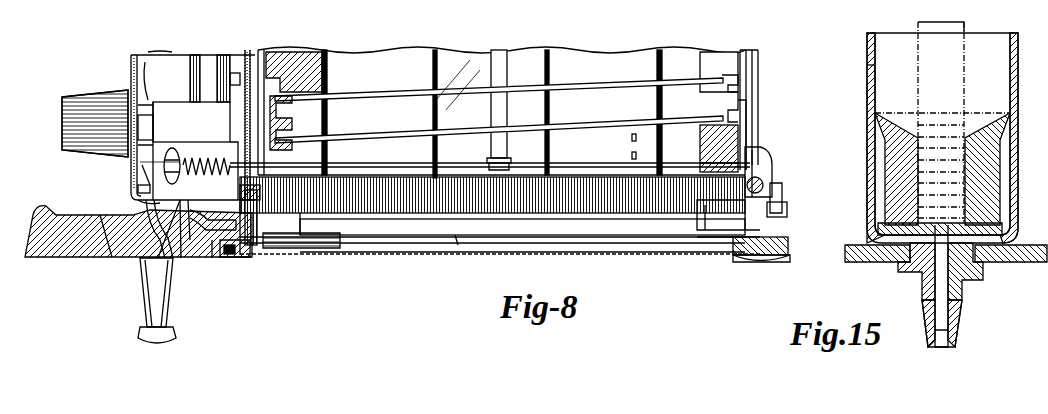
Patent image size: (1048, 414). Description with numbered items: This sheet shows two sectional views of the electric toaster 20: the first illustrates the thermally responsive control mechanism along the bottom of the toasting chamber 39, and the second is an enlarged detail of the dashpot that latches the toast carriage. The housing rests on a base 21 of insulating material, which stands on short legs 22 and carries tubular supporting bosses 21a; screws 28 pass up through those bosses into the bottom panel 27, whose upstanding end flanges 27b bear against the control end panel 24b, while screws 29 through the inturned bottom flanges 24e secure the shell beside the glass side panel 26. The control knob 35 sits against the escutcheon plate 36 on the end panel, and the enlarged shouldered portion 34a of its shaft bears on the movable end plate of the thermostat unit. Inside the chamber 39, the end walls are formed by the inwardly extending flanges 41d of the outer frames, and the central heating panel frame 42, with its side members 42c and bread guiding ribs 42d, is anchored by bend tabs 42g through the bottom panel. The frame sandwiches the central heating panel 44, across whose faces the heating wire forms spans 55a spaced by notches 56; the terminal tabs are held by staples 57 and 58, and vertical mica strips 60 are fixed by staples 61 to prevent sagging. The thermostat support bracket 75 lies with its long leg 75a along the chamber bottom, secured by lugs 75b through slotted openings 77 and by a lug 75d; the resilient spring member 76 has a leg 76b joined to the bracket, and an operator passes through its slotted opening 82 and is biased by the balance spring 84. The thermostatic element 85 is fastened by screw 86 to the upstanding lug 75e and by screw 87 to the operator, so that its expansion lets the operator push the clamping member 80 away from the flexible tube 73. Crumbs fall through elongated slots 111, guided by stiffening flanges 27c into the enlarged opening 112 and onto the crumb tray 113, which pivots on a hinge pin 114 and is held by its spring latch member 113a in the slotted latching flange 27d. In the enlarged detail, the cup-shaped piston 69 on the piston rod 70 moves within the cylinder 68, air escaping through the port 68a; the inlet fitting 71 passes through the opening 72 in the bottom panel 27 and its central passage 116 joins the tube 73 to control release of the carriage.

In FIG. 8, the electric toaster 20 is at (348, 299).
In FIG. 8, the base 21 is at (40, 208).
In FIG. 8, the tubular supporting bosses 21a is at (112, 257).
In FIG. 8, the legs 22 is at (170, 318).
In FIG. 8, the control end panel 24b is at (131, 60).
In FIG. 8, the bottom flanges 24e is at (138, 200).
In FIG. 8, the side panel 26 is at (152, 52).
In FIG. 8, the bottom panel 27 is at (290, 215).
In FIG. 15, the bottom panel 27 is at (1030, 244).
In FIG. 8, the upstanding end flanges 27b is at (137, 190).
In FIG. 8, the stiffening flanges 27c is at (545, 246).
In FIG. 8, the slotted latching flange 27d is at (748, 262).
In FIG. 8, the screws 28 is at (240, 258).
In FIG. 8, the screws 29 is at (150, 240).
In FIG. 8, the enlarged shouldered portion 34a is at (146, 60).
In FIG. 8, the control knob 35 is at (58, 100).
In FIG. 8, the escutcheon plate 36 is at (128, 72).
In FIG. 8, the toasting chamber 39 is at (578, 114).
In FIG. 8, the inwardly extending flanges 41d is at (247, 50).
In FIG. 8, the central heating panel frame 42 is at (262, 48).
In FIG. 8, the side members 42c is at (270, 58).
In FIG. 8, the bread guiding ribs 42d is at (340, 50).
In FIG. 8, the bend tabs 42g is at (252, 262).
In FIG. 8, the central heating panel 44 is at (460, 38).
In FIG. 8, the spans 55a is at (378, 104).
In FIG. 8, the notches 56 is at (278, 112).
In FIG. 8, the staple 57 is at (740, 130).
In FIG. 8, the staple 58 is at (714, 150).
In FIG. 8, the vertical mica strips 60 is at (500, 52).
In FIG. 8, the staples 61 is at (492, 158).
In FIG. 8, the cylinder 68 is at (222, 55).
In FIG. 15, the cylinder 68 is at (1017, 60).
In FIG. 15, the port 68a is at (866, 68).
In FIG. 15, the piston 69 is at (1002, 110).
In FIG. 15, the piston rod 70 is at (945, 25).
In FIG. 15, the inlet fitting 71 is at (978, 284).
In FIG. 15, the opening 72 is at (908, 272).
In FIG. 8, the flexible tube 73 is at (150, 262).
In FIG. 15, the flexible tube 73 is at (950, 335).
In FIG. 8, the thermostat support bracket 75 is at (440, 225).
In FIG. 8, the long leg 75a is at (462, 245).
In FIG. 8, the lugs 75b is at (192, 248).
In FIG. 8, the lug 75d is at (181, 262).
In FIG. 8, the upstanding lug 75e is at (765, 152).
In FIG. 8, the resilient spring member 76 is at (178, 120).
In FIG. 8, the leg 76b is at (194, 55).
In FIG. 8, the slotted openings 77 is at (784, 190).
In FIG. 8, the clamping member 80 is at (140, 162).
In FIG. 8, the slotted opening 82 is at (155, 118).
In FIG. 8, the balance spring 84 is at (200, 156).
In FIG. 8, the thermostatic element 85 is at (576, 165).
In FIG. 8, the screw 86 is at (764, 180).
In FIG. 8, the screw 87 is at (166, 150).
In FIG. 8, the elongated slots 111 is at (700, 252).
In FIG. 8, the enlarged opening 112 is at (246, 238).
In FIG. 8, the crumb tray 113 is at (397, 262).
In FIG. 8, the spring latch member 113a is at (789, 230).
In FIG. 8, the hinge pin 114 is at (214, 262).
In FIG. 15, the central passage 116 is at (935, 305).